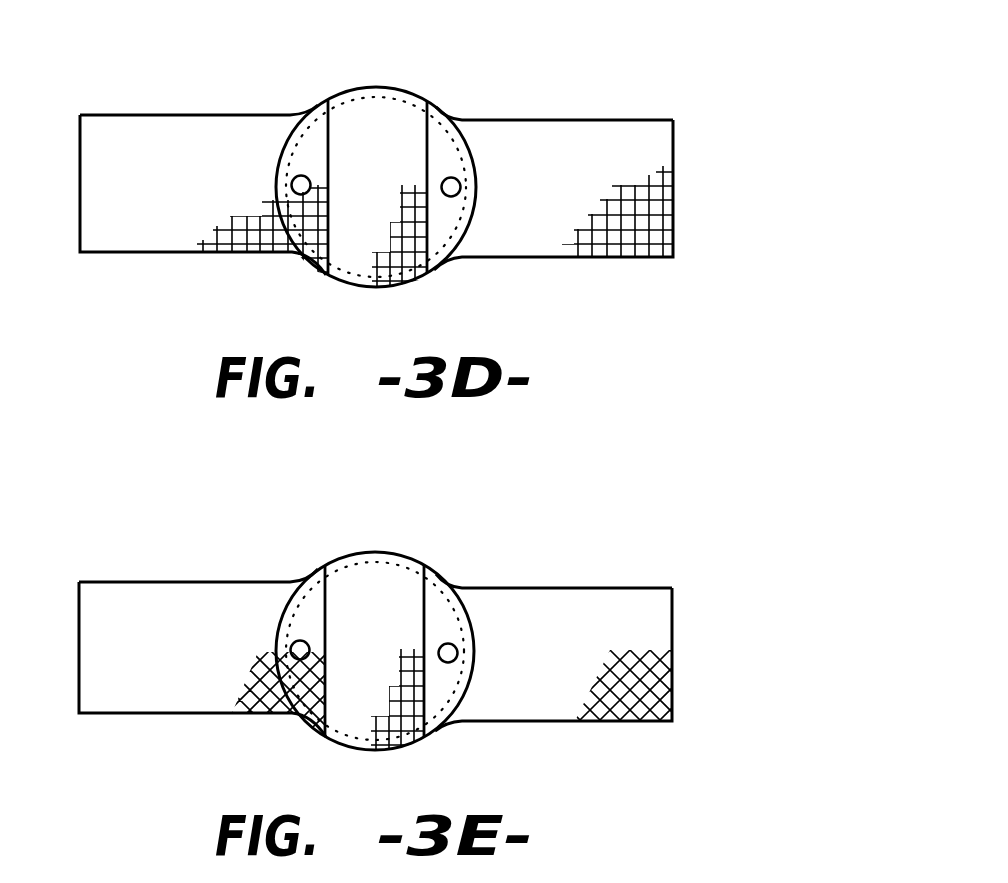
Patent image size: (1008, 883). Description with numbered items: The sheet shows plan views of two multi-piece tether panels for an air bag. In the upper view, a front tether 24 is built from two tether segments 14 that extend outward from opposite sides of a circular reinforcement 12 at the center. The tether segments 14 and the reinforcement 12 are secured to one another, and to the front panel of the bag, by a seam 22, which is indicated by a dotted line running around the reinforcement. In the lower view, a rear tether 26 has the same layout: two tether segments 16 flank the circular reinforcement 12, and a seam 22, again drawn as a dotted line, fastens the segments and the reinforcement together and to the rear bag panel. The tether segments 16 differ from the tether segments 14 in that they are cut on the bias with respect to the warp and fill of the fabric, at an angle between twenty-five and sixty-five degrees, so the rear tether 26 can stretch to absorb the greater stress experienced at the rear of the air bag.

In FIG. 3D, the circular reinforcement 12 is at (357, 115).
In FIG. 3E, the circular reinforcement 12 is at (356, 582).
In FIG. 3D, the seam 22 is at (383, 92).
In FIG. 3E, the seam 22 is at (383, 560).
In FIG. 3D, the tether segment 14 is at (117, 115).
In FIG. 3E, the tether segment 16 is at (117, 582).
In FIG. 3D, the front tether 24 is at (556, 74).
In FIG. 3E, the rear tether 26 is at (520, 559).